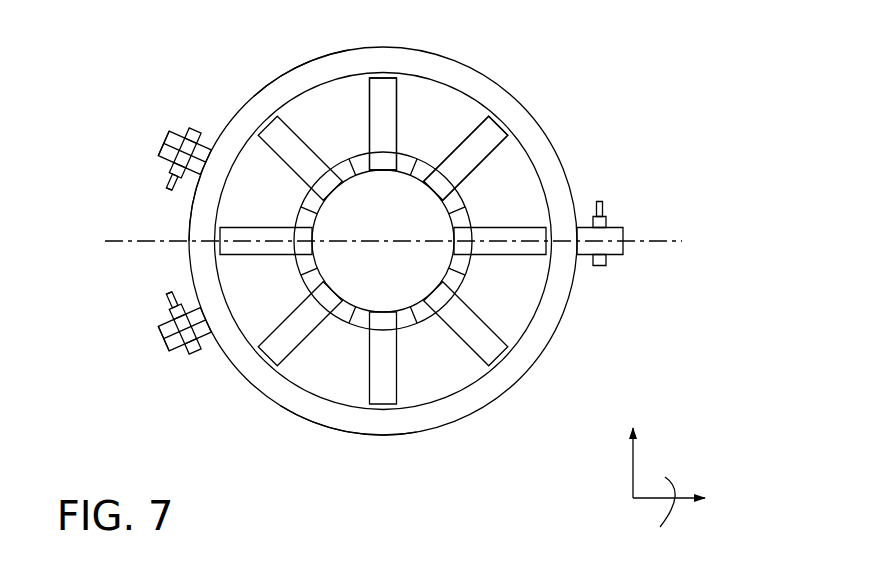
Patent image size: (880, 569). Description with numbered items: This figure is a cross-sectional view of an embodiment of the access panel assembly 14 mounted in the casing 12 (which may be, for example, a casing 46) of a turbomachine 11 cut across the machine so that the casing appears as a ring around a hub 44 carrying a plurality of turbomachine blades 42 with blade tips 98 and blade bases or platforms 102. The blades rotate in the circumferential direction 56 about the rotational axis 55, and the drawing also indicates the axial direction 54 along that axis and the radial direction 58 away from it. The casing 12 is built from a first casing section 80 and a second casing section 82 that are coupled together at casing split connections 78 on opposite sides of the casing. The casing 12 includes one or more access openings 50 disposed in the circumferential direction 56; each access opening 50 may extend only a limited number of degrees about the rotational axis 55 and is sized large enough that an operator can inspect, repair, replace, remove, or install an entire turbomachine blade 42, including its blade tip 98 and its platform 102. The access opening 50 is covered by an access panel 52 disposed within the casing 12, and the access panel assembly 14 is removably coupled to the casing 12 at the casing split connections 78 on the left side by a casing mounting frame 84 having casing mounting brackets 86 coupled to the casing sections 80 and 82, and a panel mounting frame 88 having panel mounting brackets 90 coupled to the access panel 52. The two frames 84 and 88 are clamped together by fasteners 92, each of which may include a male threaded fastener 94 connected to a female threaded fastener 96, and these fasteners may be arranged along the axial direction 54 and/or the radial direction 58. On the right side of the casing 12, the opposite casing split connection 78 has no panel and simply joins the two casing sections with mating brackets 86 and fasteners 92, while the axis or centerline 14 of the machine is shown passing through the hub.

The rotor assembly 11 is at (618, 50).
The casing 12 is at (250, 92).
The access panel assembly 14 is at (179, 243).
The turbomachine blade 42 is at (398, 106).
The hub 44 is at (365, 195).
The casing 46 is at (280, 77).
The access opening 50 is at (232, 302).
The access panel 52 is at (201, 208).
The axial direction 54 is at (651, 498).
The rotational axis 55 is at (382, 423).
The circumferential direction 56 is at (654, 473).
The radial direction 58 is at (632, 463).
The casing split connection 78 is at (116, 127).
The first casing section 80 is at (317, 58).
The second casing section 82 is at (313, 423).
The casing mounting frame 84 is at (150, 137).
The casing mounting bracket 86 is at (170, 127).
The panel mounting frame 88 is at (142, 172).
The panel mounting bracket 90 is at (152, 166).
The fastener 92 is at (186, 121).
The male threaded fastener 94 is at (195, 355).
The female threaded fastener 96 is at (167, 305).
The blade tip 98 is at (383, 78).
The blade base or platform 102 is at (470, 98).